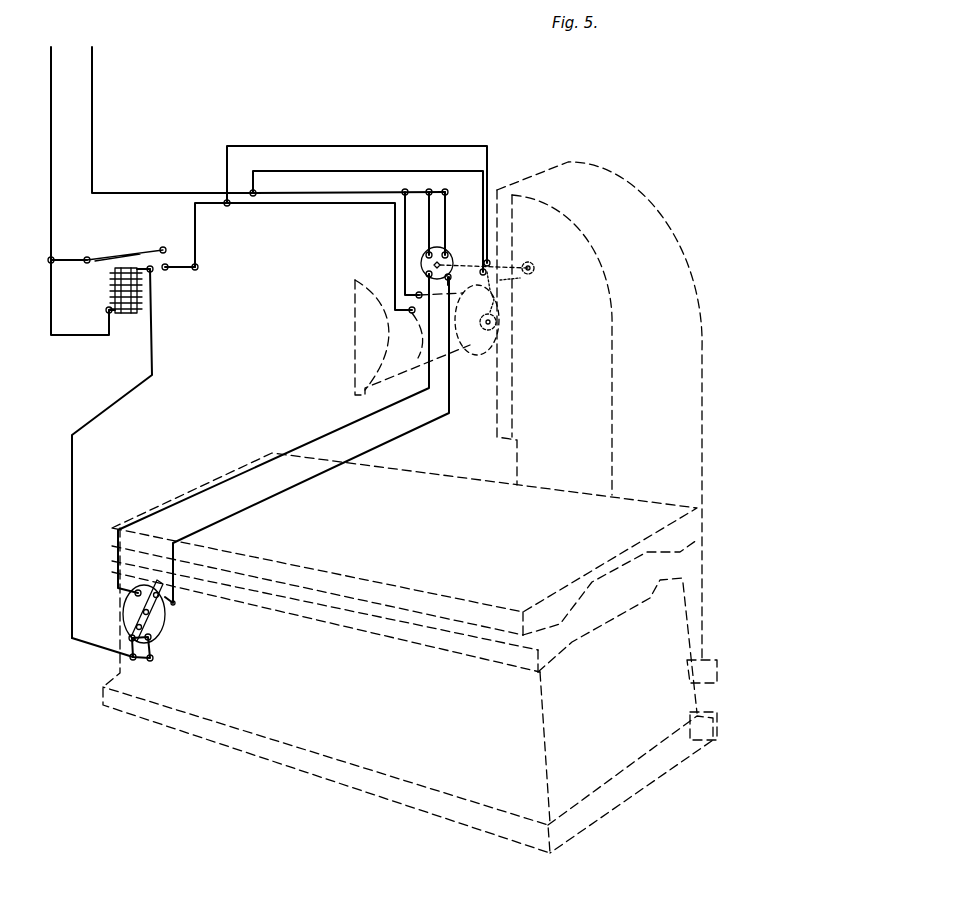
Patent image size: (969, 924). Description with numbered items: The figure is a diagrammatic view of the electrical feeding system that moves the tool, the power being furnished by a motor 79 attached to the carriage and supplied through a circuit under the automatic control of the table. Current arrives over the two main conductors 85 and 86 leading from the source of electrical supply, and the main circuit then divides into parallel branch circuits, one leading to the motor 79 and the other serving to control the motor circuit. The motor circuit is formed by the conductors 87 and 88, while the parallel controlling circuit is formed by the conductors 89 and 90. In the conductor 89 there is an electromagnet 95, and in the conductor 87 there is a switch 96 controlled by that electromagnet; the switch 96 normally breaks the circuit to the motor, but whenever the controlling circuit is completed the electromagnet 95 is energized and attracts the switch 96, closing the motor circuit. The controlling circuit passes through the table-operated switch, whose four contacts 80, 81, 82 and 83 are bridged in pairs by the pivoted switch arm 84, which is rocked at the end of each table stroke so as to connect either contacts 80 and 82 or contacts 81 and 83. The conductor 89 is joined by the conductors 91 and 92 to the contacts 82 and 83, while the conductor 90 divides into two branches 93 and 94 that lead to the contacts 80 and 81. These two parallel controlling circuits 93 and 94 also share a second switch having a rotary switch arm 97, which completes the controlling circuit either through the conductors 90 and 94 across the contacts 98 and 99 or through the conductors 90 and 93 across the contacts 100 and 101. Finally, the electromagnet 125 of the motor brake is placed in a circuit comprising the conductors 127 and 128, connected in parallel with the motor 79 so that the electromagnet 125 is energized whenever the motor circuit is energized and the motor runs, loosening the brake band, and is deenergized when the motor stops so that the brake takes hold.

The motor 79 is at (462, 350).
The contact 80 is at (132, 593).
The contact 81 is at (175, 601).
The contact 82 is at (155, 636).
The contact 83 is at (128, 632).
The pivoted switch arm 84 is at (163, 606).
The main conductor 85 is at (53, 142).
The main conductor 86 is at (96, 142).
The motor circuit conductor 87 is at (272, 205).
The motor circuit conductor 88 is at (404, 230).
The controlling circuit conductor 89 is at (121, 398).
The controlling circuit conductor 90 is at (352, 193).
The conductor 91 is at (128, 650).
The conductor 92 is at (156, 657).
The branch conductor 93 is at (350, 426).
The branch conductor 94 is at (426, 427).
The electromagnet 95 is at (112, 296).
The switch 96 is at (140, 254).
The rotary switch arm 97 is at (455, 264).
The contact 98 is at (424, 258).
The contact 99 is at (452, 278).
The contact 100 is at (468, 236).
The contact 101 is at (408, 281).
The electromagnet 125 is at (527, 262).
The conductor 127 is at (246, 146).
The conductor 128 is at (306, 171).